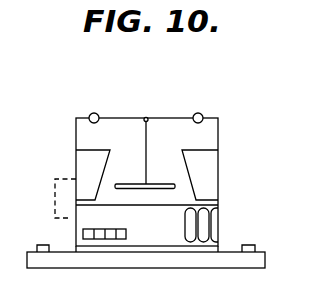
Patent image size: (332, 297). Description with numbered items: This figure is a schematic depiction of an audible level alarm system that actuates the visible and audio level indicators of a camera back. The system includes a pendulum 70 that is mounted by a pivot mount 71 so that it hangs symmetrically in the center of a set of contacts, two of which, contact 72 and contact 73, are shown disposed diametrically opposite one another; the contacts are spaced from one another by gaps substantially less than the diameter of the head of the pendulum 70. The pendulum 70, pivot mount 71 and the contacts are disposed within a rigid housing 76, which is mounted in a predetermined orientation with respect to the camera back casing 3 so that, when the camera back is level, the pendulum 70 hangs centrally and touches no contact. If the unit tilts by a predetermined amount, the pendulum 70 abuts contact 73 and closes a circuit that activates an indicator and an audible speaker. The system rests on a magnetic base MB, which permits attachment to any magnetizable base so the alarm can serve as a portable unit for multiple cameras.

The magnetic base MB is at (218, 246).
The contact 73 is at (212, 170).
The contact 72 is at (76, 168).
The pivot mount 71 is at (146, 118).
The pendulum 70 is at (130, 184).
The housing 76 is at (91, 113).
The camera back casing 3 is at (212, 270).